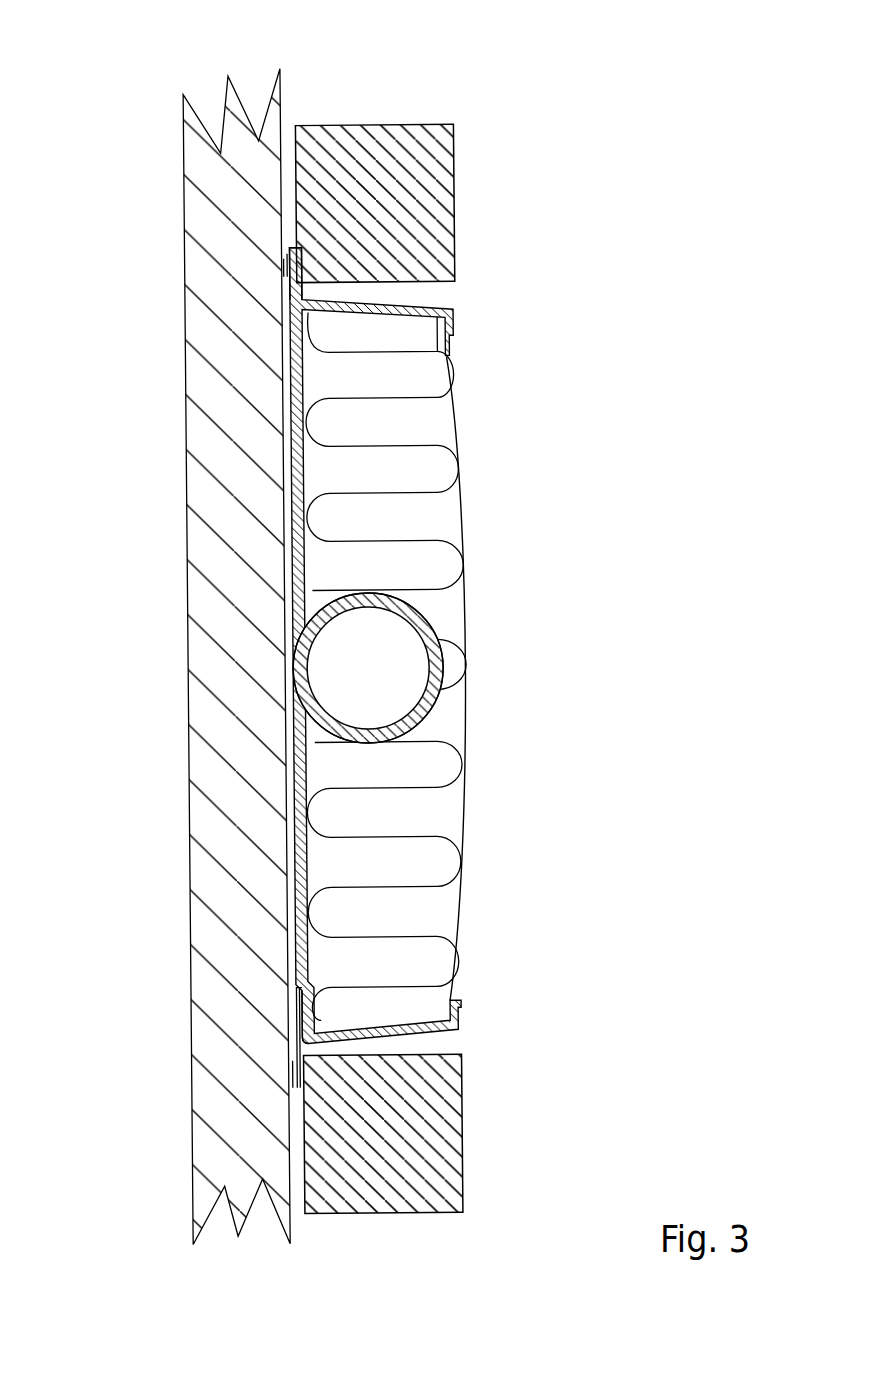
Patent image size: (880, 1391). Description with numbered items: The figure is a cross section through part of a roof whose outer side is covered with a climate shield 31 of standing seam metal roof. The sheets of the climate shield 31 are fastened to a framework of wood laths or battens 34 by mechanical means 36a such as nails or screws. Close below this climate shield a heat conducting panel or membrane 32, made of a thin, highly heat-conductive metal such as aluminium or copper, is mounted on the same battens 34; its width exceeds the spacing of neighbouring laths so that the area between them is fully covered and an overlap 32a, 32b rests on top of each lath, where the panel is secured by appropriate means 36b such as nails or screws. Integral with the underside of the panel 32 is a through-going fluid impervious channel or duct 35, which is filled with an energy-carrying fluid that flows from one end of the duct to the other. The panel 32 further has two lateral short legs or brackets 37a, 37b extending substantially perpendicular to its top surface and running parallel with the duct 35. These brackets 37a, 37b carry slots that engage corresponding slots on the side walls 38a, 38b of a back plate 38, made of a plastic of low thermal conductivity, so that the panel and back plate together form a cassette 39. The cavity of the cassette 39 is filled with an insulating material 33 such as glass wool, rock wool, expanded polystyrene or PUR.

The climate shield 31 is at (203, 747).
The heat conducting panel or membrane 32 is at (297, 556).
The overlap 32a is at (295, 1065).
The overlap 32b is at (292, 250).
The insulating material 33 is at (420, 868).
The batten 34 is at (448, 168).
The fluid impervious channel or duct 35 is at (427, 650).
The mechanical means 36a is at (297, 1076).
The securing means 36b is at (288, 262).
The lateral short leg or bracket 37a is at (403, 1026).
The lateral short leg or bracket 37b is at (400, 302).
The back plate 38 is at (466, 727).
The side wall of back plate 38a is at (462, 1027).
The side wall of back plate 38b is at (455, 334).
The cassette 39 is at (490, 486).